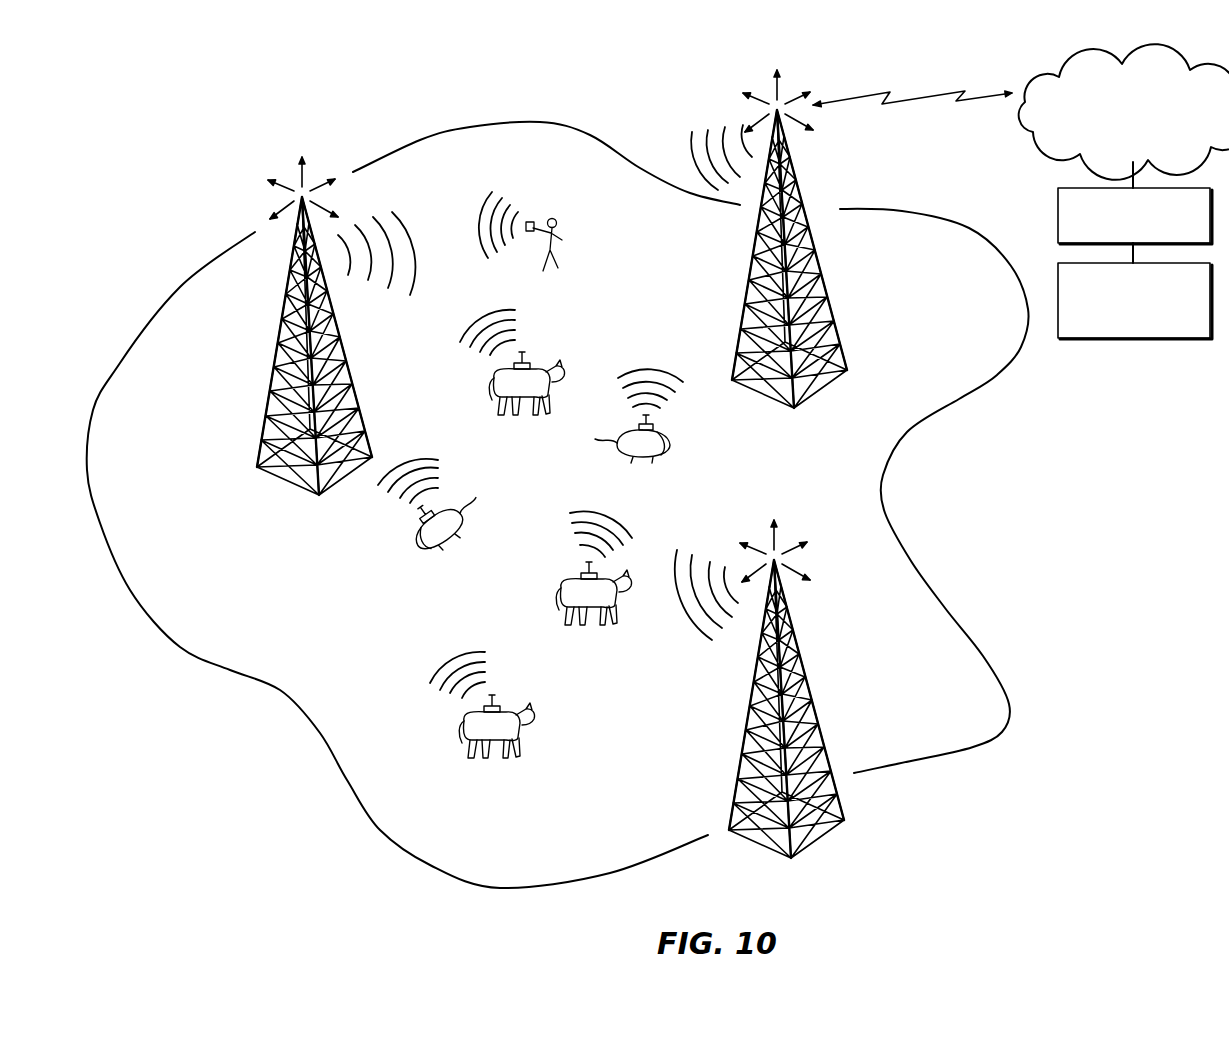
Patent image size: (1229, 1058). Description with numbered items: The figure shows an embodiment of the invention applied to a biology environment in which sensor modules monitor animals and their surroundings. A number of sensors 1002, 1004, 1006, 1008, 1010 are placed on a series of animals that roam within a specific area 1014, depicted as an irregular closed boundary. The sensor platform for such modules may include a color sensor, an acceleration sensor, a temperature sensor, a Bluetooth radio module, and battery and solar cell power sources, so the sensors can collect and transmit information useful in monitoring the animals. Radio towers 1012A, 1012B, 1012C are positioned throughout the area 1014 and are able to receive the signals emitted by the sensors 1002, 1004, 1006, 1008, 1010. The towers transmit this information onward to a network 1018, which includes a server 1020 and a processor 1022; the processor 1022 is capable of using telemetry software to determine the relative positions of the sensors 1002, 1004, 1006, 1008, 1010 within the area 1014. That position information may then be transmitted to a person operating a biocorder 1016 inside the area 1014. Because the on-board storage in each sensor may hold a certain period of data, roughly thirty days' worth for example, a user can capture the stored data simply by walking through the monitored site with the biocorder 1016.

The sensor 1002 is at (692, 454).
The sensor 1004 is at (478, 398).
The sensor 1006 is at (440, 558).
The sensor 1008 is at (585, 634).
The sensor 1010 is at (492, 769).
The radio tower 1012A is at (840, 289).
The radio tower 1012B is at (832, 702).
The radio tower 1012C is at (260, 354).
The area 1014 is at (920, 561).
The biocorder 1016 is at (561, 247).
The network 1018 is at (1021, 112).
The server 1020 is at (1135, 203).
The processor 1022 is at (1135, 291).